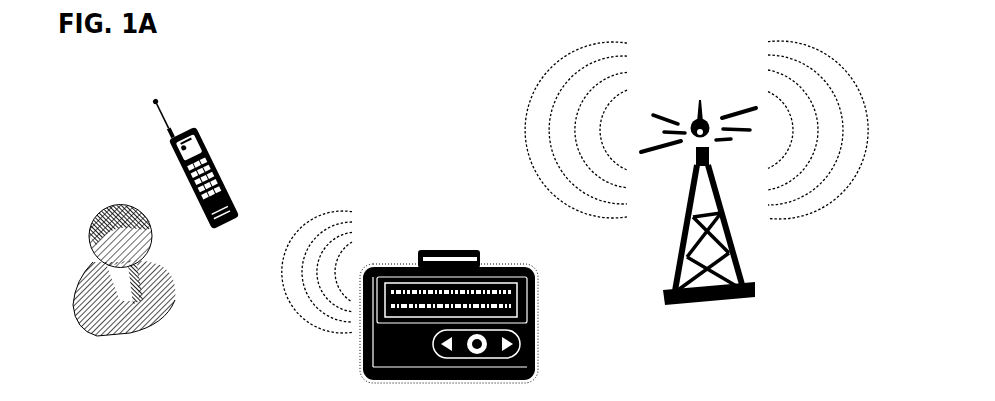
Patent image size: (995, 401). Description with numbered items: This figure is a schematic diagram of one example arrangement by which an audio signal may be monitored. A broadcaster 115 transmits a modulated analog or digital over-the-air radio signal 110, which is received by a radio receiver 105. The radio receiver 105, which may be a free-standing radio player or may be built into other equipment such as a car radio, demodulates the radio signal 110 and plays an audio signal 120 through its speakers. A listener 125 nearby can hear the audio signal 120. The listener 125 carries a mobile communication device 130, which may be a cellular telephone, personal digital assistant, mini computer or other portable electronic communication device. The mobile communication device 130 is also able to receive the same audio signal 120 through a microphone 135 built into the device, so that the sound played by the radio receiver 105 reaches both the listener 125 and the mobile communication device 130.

The radio receiver 105 is at (467, 236).
The over-the-air radio signal 110 is at (517, 89).
The broadcaster 115 is at (718, 68).
The audio signal 120 is at (277, 315).
The listener 125 is at (72, 255).
The mobile communication device 130 is at (235, 146).
The microphone 135 is at (258, 205).